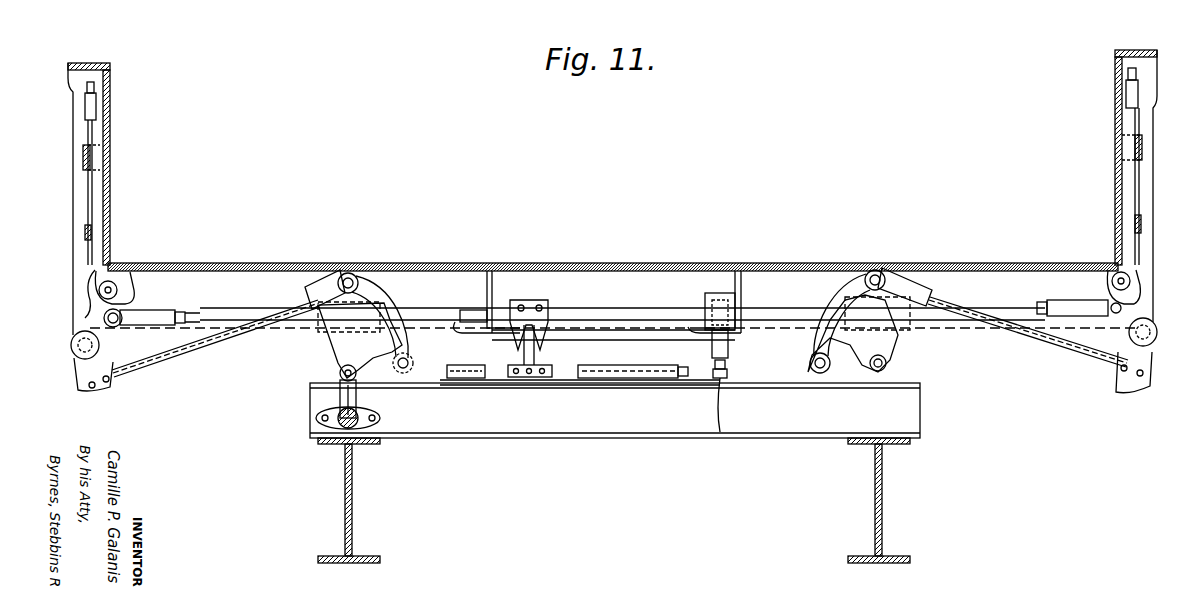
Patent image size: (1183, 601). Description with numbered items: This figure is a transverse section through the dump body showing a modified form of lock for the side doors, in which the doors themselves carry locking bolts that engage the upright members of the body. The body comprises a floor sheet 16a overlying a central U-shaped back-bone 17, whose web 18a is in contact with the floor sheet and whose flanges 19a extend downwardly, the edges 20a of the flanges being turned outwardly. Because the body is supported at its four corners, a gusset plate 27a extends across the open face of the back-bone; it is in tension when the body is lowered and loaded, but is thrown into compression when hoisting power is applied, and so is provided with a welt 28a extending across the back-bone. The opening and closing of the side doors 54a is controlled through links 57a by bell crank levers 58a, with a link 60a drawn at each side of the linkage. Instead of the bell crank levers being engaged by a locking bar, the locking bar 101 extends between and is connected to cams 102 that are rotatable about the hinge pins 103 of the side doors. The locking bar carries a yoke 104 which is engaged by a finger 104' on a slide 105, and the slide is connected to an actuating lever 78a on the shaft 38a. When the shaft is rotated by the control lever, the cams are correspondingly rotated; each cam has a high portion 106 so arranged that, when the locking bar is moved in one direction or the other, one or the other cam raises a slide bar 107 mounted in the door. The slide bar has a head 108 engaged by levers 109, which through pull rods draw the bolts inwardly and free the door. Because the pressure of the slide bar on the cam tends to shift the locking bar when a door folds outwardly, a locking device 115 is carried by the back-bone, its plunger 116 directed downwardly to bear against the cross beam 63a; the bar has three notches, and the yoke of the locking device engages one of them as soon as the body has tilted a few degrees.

The floor sheet 16a is at (446, 257).
The back-bone 17 is at (741, 276).
The web 18a is at (681, 271).
The flange 19a is at (742, 284).
The edge 20a is at (760, 331).
The gusset plate 27a is at (470, 331).
The welt 28a is at (696, 346).
The shaft 38a is at (343, 434).
The side door 54a is at (112, 191).
The link 57a is at (186, 346).
The bell crank lever 58a is at (386, 306).
The link 60a is at (336, 341).
The cross beam 63a is at (657, 434).
The actuating lever 78a is at (340, 393).
The locking bar 101 is at (611, 307).
The cam 102 is at (125, 306).
The hinge pin 103 is at (113, 282).
The yoke 104 is at (531, 301).
The finger 104' is at (557, 383).
The slide 105 is at (501, 378).
The high portion 106 is at (95, 296).
The slide bar 107 is at (90, 214).
The head 108 is at (86, 106).
The lever 109 is at (88, 88).
The locking device 115 is at (712, 294).
The plunger 116 is at (720, 432).